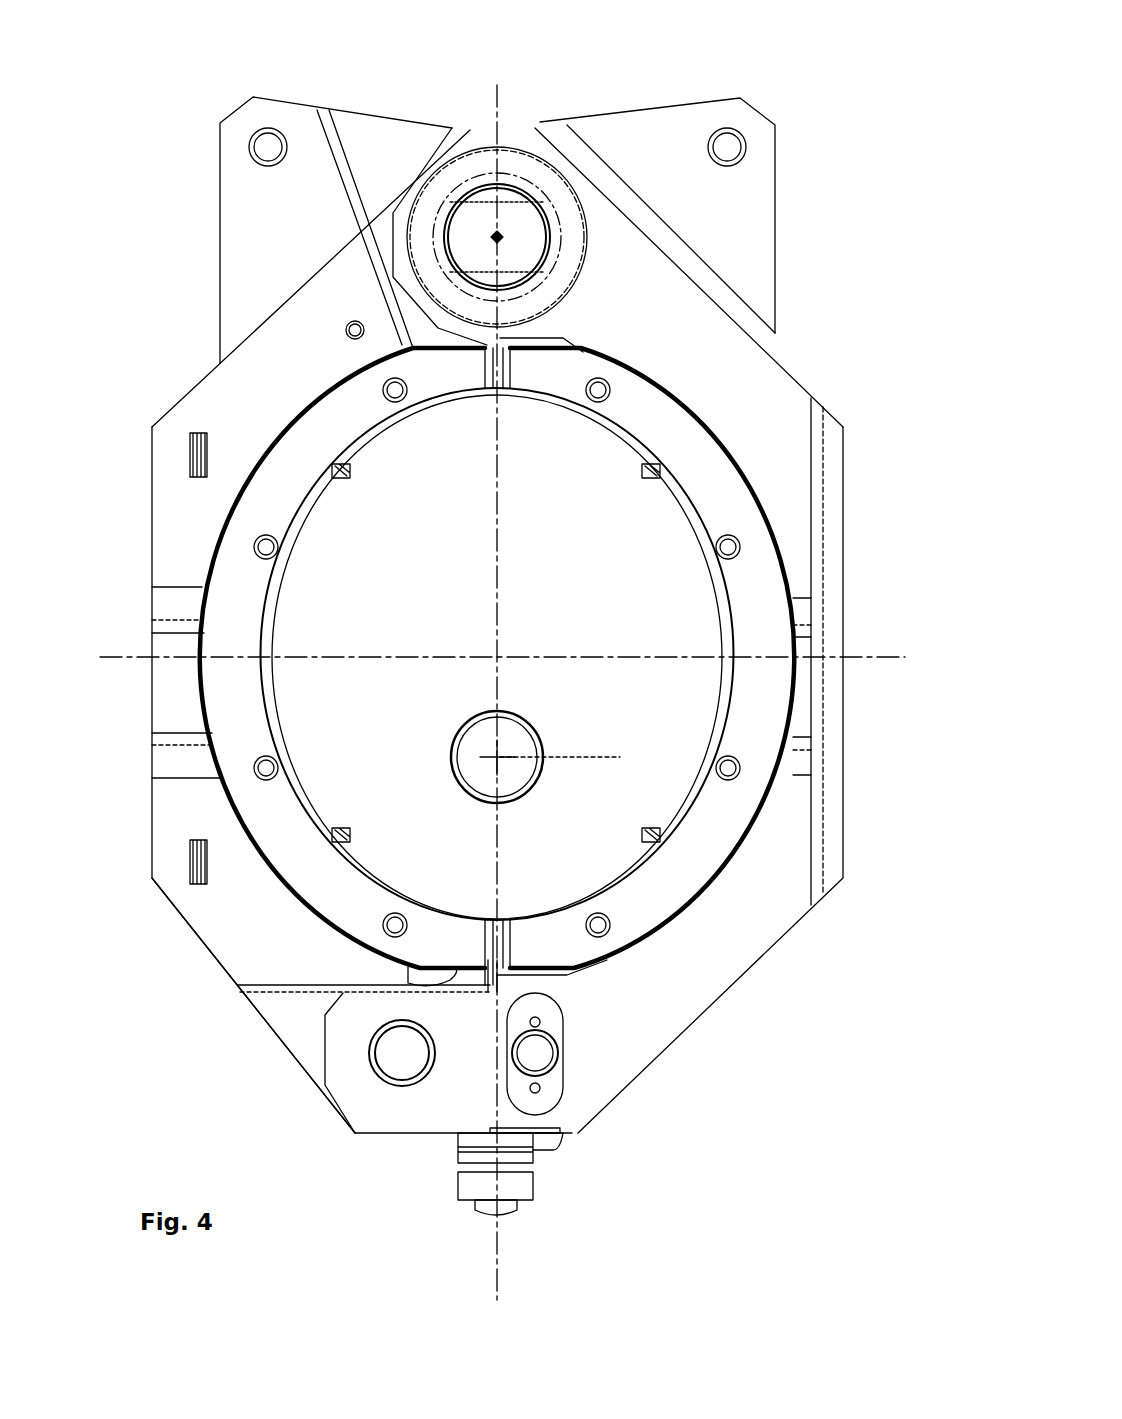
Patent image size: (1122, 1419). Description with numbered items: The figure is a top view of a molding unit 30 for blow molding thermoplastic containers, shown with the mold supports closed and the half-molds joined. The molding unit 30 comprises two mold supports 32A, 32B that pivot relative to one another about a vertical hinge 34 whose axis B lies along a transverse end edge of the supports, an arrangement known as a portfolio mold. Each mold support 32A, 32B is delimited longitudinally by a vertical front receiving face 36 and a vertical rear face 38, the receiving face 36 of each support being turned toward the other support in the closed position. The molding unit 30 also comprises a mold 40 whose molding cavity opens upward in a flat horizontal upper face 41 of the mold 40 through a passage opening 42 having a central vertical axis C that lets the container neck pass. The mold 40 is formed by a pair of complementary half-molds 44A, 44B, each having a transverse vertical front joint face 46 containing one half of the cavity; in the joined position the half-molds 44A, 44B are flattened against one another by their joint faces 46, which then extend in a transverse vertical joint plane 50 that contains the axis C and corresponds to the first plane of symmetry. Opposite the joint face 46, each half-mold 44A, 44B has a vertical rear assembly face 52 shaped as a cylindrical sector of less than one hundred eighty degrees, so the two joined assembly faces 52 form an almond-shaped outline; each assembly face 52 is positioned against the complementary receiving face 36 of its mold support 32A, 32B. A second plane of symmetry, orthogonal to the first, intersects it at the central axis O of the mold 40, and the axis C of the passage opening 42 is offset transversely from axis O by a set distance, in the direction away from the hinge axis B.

The molding unit 30 is at (735, 80).
The mold support 32A is at (180, 806).
The mold support 32B is at (752, 885).
The hinge 34 is at (525, 160).
The receiving face 36 is at (238, 527).
The rear face 38 is at (150, 505).
The mold 40 is at (648, 565).
The upper face 41 is at (388, 588).
The passage opening 42 is at (481, 741).
The half-mold 44A is at (300, 628).
The half-mold 44B is at (680, 625).
The joint face 46 is at (505, 540).
The joint plane 50 is at (502, 1282).
The assembly face 52 is at (233, 502).